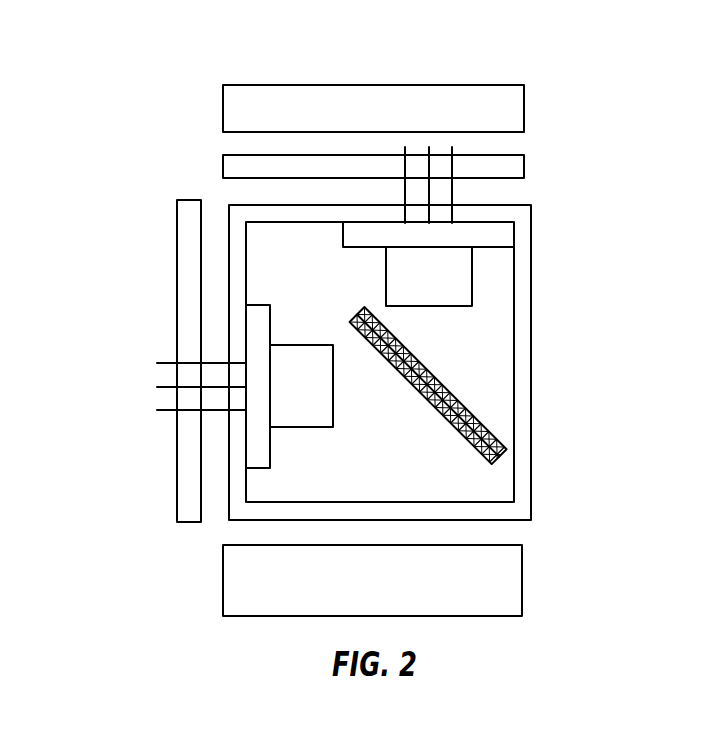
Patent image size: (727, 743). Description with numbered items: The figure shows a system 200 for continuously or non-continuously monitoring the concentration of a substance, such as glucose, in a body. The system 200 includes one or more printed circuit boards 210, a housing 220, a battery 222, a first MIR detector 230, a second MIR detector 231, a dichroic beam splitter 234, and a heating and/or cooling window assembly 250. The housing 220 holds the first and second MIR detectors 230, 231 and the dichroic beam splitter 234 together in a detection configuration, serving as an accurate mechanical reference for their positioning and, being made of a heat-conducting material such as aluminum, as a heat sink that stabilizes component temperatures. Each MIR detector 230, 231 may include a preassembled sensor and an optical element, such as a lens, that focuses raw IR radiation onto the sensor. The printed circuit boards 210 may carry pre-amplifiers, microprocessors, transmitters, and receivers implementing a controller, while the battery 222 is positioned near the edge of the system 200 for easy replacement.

The system 200 is at (163, 53).
The printed circuit board 210 is at (231, 165).
The housing 220 is at (527, 205).
The battery 222 is at (505, 113).
The first MIR detector 230 is at (472, 272).
The second MIR detector 231 is at (290, 355).
The dichroic beam splitter 234 is at (440, 415).
The heating and/or cooling window assembly 250 is at (234, 583).